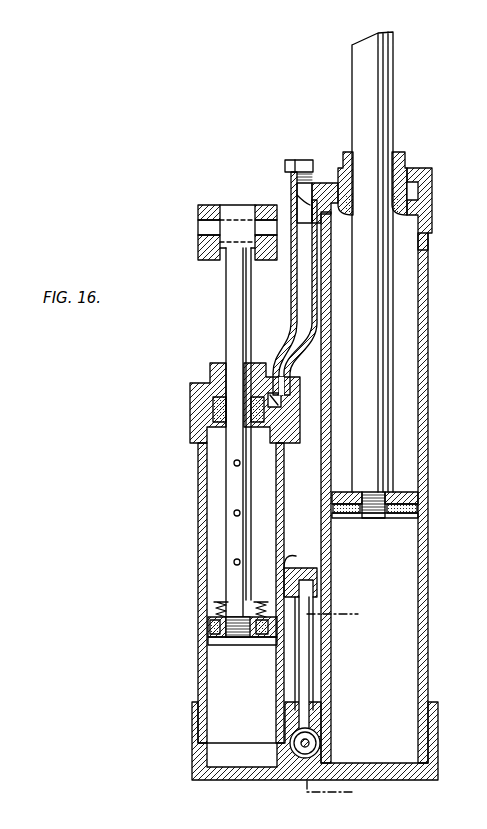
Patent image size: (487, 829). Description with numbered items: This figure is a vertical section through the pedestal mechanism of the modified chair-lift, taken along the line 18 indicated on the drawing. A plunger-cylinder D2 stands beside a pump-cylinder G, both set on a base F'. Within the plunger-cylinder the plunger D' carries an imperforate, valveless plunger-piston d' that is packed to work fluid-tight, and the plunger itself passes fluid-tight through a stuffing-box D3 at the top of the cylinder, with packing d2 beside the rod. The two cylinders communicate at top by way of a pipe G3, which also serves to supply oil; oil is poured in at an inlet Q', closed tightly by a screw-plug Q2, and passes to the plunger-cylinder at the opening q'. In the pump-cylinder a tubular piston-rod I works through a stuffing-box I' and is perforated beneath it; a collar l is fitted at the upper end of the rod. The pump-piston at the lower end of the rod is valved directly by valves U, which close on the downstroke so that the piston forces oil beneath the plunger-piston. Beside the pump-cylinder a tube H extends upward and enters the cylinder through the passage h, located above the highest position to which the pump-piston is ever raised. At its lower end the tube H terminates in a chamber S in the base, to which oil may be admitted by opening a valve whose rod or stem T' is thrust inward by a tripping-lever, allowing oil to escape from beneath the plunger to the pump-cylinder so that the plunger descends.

The base F' is at (326, 741).
The pump-cylinder G is at (198, 523).
The tubular piston-rod I is at (225, 442).
The collar l is at (199, 210).
The stuffing-box I' is at (228, 403).
The pipe G3 is at (308, 295).
The inlet Q' is at (295, 198).
The screw-plug Q2 is at (302, 160).
The opening q' is at (339, 175).
The piston rod D' is at (355, 262).
The packing gland d2 is at (399, 152).
The stuffing-box D3 is at (431, 181).
The cylinder D2 is at (428, 302).
The plunger-piston d' is at (375, 519).
The passage-way h is at (292, 570).
The tube H is at (305, 660).
The valve rod or stem T' is at (323, 732).
The chamber S is at (303, 758).
The section line 18 is at (343, 709).
The valves U is at (260, 644).